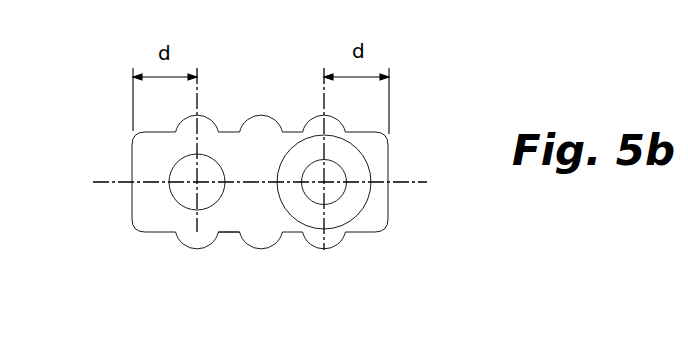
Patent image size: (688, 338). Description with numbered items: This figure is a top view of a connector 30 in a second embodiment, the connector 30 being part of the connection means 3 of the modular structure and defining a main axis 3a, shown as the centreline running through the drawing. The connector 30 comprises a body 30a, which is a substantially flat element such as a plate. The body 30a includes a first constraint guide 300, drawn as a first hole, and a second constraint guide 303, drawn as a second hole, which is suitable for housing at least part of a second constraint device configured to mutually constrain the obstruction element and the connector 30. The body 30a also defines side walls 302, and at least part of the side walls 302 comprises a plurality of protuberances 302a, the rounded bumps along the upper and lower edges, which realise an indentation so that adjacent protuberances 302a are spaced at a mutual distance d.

The connection means 3 is at (443, 83).
The main axis 3a is at (423, 182).
The connector 30 is at (87, 155).
The body 30a is at (275, 224).
The first constraint guide 300 is at (181, 197).
The side walls 302 is at (231, 131).
The protuberances 302a is at (312, 250).
The second constraint guide 303 is at (335, 203).